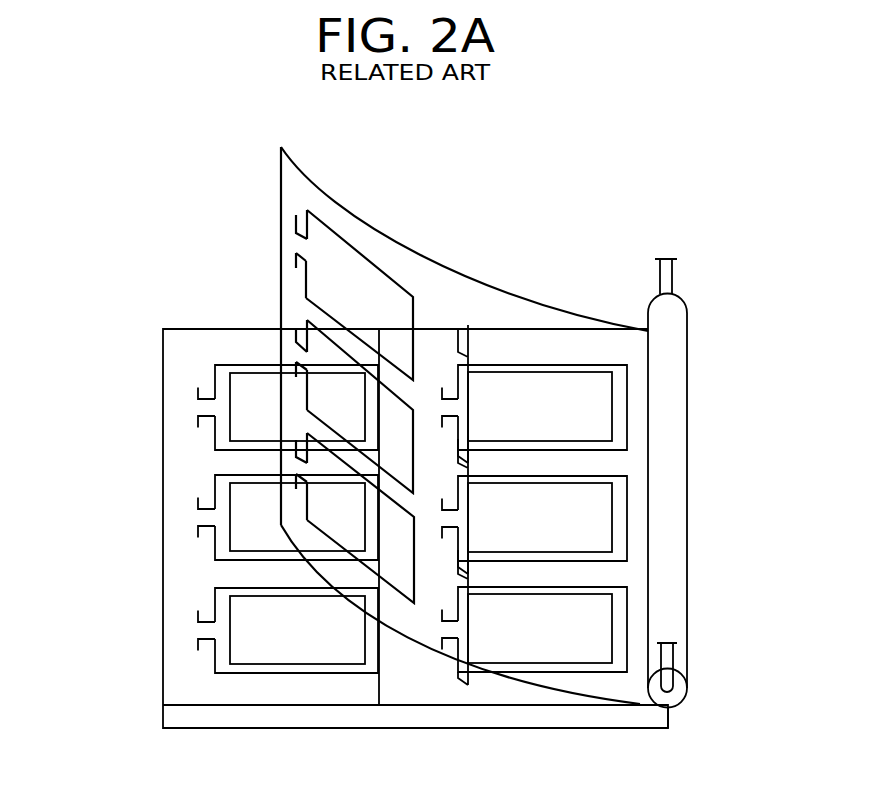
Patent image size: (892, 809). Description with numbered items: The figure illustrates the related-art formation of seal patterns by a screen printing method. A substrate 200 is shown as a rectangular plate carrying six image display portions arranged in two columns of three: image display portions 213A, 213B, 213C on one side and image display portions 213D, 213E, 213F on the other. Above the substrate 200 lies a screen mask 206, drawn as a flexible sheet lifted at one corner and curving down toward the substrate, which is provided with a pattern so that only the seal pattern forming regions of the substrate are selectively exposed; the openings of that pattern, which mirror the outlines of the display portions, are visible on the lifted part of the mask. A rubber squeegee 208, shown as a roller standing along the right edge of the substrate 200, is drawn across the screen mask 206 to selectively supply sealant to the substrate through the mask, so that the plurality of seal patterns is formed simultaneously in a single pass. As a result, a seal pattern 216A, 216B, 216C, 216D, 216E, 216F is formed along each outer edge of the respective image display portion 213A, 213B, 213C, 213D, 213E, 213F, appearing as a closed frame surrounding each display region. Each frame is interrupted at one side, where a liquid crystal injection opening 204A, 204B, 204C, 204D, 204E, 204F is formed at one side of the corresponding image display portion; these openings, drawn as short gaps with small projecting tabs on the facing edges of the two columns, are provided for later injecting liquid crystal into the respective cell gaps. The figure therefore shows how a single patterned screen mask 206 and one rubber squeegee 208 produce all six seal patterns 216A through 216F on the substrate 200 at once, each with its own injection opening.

The substrate 200 is at (653, 719).
The screen mask 206 is at (313, 186).
The rubber squeegee 208 is at (672, 320).
The liquid crystal injection opening 204A is at (433, 405).
The liquid crystal injection opening 204B is at (440, 517).
The liquid crystal injection opening 204C is at (443, 628).
The liquid crystal injection opening 204D is at (196, 406).
The liquid crystal injection opening 204E is at (196, 517).
The liquid crystal injection opening 204F is at (196, 628).
The image display portion 213A is at (583, 418).
The image display portion 213B is at (583, 529).
The image display portion 213C is at (583, 640).
The image display portion 213D is at (278, 419).
The image display portion 213E is at (278, 529).
The image display portion 213F is at (278, 642).
The seal pattern 216A is at (528, 365).
The seal pattern 216B is at (528, 476).
The seal pattern 216C is at (528, 587).
The seal pattern 216D is at (213, 382).
The seal pattern 216E is at (213, 492).
The seal pattern 216F is at (213, 603).